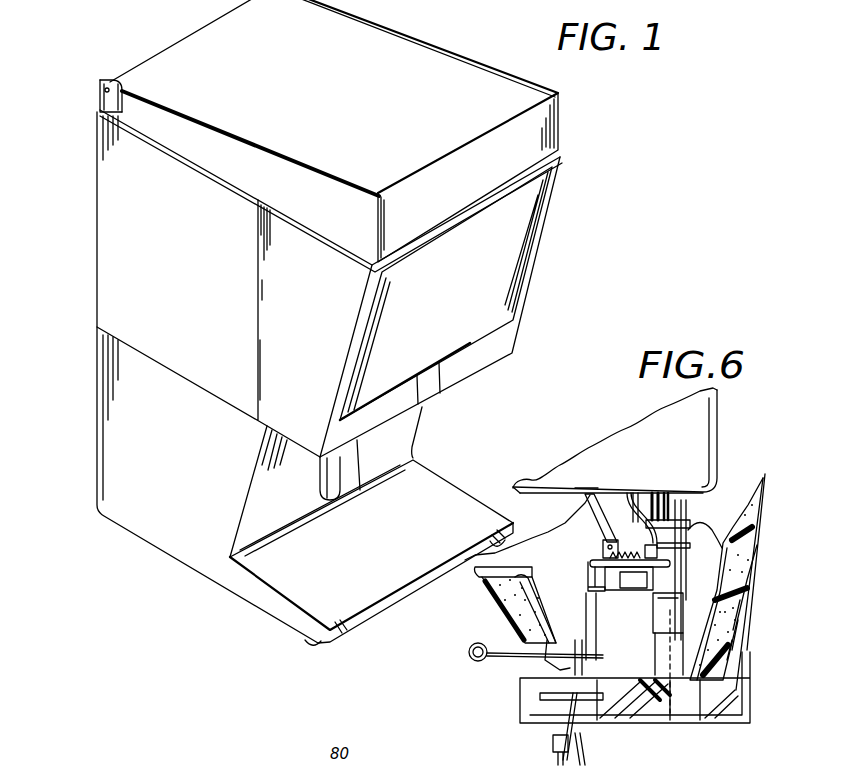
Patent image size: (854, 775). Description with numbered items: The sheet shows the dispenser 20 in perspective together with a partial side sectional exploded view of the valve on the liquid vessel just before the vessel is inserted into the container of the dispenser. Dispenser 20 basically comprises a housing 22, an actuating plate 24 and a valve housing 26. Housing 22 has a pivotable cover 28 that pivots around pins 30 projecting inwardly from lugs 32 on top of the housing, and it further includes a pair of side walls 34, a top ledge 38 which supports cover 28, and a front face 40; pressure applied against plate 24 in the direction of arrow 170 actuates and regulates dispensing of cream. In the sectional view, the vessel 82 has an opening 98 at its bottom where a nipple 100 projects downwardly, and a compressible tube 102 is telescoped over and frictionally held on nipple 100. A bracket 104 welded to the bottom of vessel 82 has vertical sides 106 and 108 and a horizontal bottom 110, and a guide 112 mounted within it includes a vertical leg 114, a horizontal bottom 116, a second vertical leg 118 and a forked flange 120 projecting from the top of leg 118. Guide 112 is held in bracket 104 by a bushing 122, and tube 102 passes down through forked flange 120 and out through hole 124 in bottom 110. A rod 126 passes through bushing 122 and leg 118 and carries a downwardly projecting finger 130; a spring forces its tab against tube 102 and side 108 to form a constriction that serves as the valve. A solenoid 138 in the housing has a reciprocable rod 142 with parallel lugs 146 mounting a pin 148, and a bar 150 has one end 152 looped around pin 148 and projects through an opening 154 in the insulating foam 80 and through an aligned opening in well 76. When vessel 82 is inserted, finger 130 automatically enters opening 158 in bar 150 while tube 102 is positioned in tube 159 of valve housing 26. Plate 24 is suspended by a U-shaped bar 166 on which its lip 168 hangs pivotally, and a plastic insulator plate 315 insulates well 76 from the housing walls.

In FIG. 1, the dispenser 20 is at (585, 218).
In FIG. 1, the housing 22 is at (97, 212).
In FIG. 1, the actuating plate 24 is at (331, 503).
In FIG. 1, the valve housing 26 is at (433, 394).
In FIG. 6, the valve housing 26 is at (751, 650).
In FIG. 1, the pivotable cover 28 is at (301, 112).
In FIG. 1, the pins 30 is at (104, 80).
In FIG. 1, the lugs 32 is at (100, 97).
In FIG. 1, the side walls 34 is at (181, 284).
In FIG. 1, the top ledge 38 is at (206, 173).
In FIG. 1, the front face 40 is at (446, 294).
In FIG. 1, the arrow 170 is at (340, 470).
In FIG. 6, the well 76 is at (552, 566).
In FIG. 6, the foam 80 is at (483, 612).
In FIG. 6, the vessel 82 is at (720, 415).
In FIG. 6, the opening 98 is at (657, 485).
In FIG. 6, the nipple 100 is at (676, 490).
In FIG. 6, the compressible tube 102 is at (640, 490).
In FIG. 6, the bracket 104 is at (585, 508).
In FIG. 6, the vertical side 106 is at (603, 545).
In FIG. 6, the vertical side 108 is at (683, 548).
In FIG. 6, the horizontal bottom 110 is at (591, 626).
In FIG. 6, the guide 112 is at (590, 490).
In FIG. 6, the vertical leg 114 is at (620, 488).
In FIG. 6, the horizontal bottom 116 is at (654, 642).
In FIG. 6, the second vertical leg 118 is at (646, 540).
In FIG. 6, the forked flange 120 is at (692, 522).
In FIG. 6, the bushing 122 is at (596, 600).
In FIG. 6, the hole 124 is at (650, 661).
In FIG. 6, the rod 126 is at (683, 581).
In FIG. 6, the finger 130 is at (593, 578).
In FIG. 6, the solenoid 138 is at (631, 772).
In FIG. 6, the rod 142 is at (169, 771).
In FIG. 6, the lugs 146 is at (224, 771).
In FIG. 6, the pin 148 is at (269, 768).
In FIG. 6, the bar 150 is at (512, 660).
In FIG. 6, the end 152 is at (469, 655).
In FIG. 6, the opening 154 is at (360, 762).
In FIG. 6, the opening 158 is at (588, 647).
In FIG. 6, the tube 159 is at (673, 724).
In FIG. 6, the U-shaped bar 166 is at (556, 746).
In FIG. 6, the lip 168 is at (580, 733).
In FIG. 6, the plastic insulator plate 315 is at (565, 712).